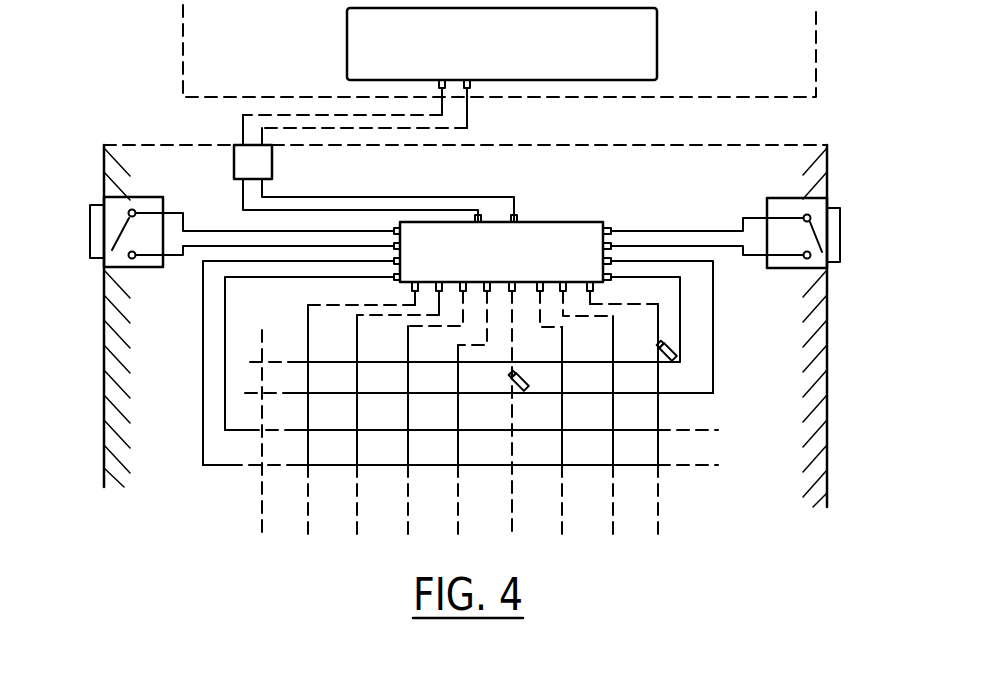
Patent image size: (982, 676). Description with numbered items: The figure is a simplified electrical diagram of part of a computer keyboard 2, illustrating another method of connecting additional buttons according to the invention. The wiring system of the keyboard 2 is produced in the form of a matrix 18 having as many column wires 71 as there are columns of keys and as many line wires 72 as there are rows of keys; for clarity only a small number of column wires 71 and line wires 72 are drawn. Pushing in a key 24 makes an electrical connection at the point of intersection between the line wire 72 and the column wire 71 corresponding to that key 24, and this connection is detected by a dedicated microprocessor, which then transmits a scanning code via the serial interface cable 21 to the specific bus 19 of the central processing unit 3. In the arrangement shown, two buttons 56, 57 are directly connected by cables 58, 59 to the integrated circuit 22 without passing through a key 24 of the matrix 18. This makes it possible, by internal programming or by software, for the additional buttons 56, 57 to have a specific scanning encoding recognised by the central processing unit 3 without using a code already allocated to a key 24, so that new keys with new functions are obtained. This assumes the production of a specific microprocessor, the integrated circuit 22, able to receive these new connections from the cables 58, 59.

The keyboard 2 is at (827, 490).
The central processing unit 3 is at (818, 63).
The matrix 18 is at (548, 445).
The specific bus 19 is at (657, 48).
The serial interface cable 21 is at (455, 118).
The integrated circuit 22 is at (560, 242).
The key 24 is at (660, 362).
The button 56 is at (90, 226).
The button 57 is at (840, 236).
The cable 58 is at (672, 229).
The cable 59 is at (722, 248).
The column wires 71 is at (357, 508).
The line wires 72 is at (201, 466).